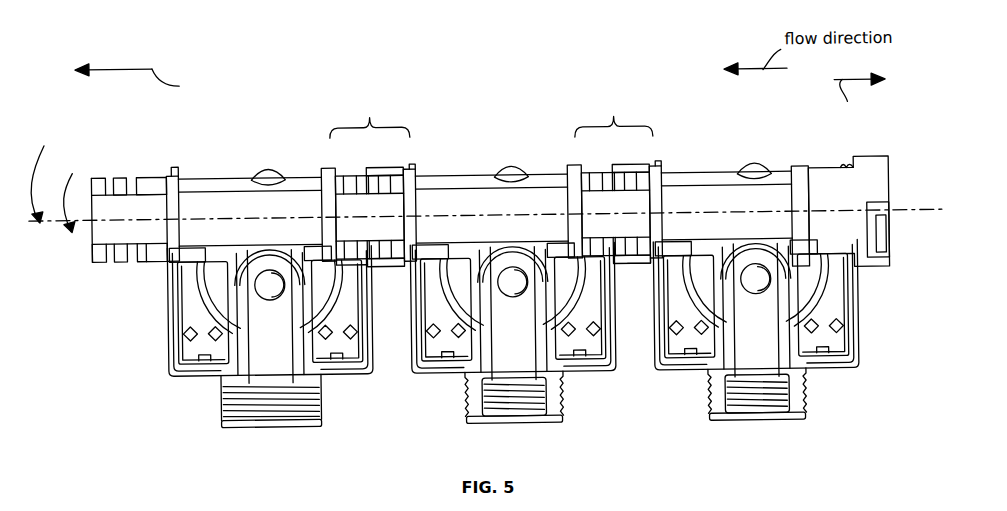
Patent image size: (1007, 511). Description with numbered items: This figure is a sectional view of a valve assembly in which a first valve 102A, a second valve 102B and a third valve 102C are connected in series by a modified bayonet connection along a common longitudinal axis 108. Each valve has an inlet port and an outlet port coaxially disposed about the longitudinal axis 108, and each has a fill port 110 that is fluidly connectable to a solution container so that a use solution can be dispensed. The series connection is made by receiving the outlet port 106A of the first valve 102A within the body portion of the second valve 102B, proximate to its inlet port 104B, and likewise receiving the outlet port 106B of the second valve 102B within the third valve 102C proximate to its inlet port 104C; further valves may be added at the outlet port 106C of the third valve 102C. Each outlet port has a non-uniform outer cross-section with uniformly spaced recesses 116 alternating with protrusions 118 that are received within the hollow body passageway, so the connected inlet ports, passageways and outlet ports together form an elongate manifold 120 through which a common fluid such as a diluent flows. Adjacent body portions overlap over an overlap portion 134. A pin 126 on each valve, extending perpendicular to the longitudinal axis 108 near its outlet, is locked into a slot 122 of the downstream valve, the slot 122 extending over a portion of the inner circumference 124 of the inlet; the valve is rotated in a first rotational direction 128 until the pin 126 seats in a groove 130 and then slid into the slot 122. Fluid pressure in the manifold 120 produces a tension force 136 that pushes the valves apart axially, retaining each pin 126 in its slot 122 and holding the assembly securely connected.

The first valve 102A is at (727, 187).
The second valve 102B is at (460, 178).
The third valve 102C is at (197, 175).
The inlet port of the second valve 104B is at (634, 173).
The inlet port of the third valve 104C is at (367, 192).
The outlet port of the first valve 106A is at (580, 196).
The outlet port of the second valve 106B is at (337, 196).
The outlet port of the third valve 106C is at (93, 183).
The longitudinal axis 108 is at (926, 215).
The fill port 110 is at (264, 426).
The recesses 116 is at (372, 258).
The protrusions 118 is at (346, 175).
The manifold 120 is at (736, 187).
The slot 122 is at (356, 174).
The inner circumference 124 is at (880, 172).
The pin 126 is at (147, 258).
The first rotational direction 128 is at (71, 191).
The groove 130 is at (41, 173).
The overlap portion 134 is at (491, 115).
The tension force 136 is at (480, 90).